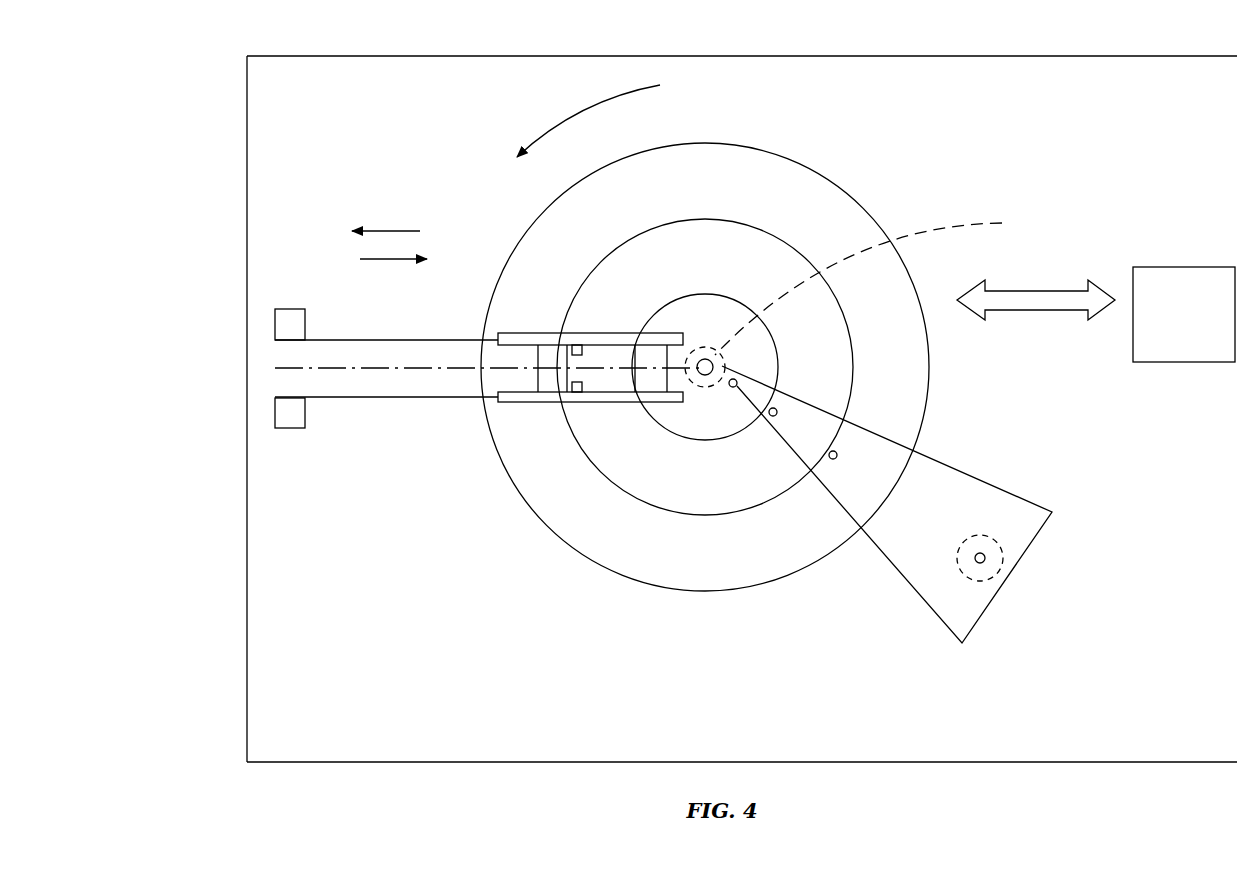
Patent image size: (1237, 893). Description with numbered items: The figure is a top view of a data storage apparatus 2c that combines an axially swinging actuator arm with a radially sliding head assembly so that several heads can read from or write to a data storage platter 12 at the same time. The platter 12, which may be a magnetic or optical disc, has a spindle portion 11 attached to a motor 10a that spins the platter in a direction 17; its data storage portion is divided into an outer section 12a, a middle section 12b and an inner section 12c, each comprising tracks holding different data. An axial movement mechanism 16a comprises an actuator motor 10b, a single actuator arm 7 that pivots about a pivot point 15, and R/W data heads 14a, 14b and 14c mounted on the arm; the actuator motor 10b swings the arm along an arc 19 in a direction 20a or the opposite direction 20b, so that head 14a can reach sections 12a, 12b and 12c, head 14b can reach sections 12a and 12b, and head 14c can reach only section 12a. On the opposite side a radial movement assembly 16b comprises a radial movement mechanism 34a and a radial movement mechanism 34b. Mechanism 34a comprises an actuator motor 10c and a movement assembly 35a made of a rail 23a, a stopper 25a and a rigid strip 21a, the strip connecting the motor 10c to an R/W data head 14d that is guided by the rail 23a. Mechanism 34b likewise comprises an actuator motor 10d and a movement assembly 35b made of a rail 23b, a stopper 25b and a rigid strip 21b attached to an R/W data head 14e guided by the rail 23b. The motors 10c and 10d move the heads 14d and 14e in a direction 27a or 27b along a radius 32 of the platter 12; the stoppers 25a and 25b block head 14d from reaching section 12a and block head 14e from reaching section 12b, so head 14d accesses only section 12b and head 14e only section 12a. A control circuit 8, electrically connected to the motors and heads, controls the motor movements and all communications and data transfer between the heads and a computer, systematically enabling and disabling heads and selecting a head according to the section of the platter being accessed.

The data storage apparatus 2c is at (222, 145).
The single actuator arm 7 is at (995, 488).
The control circuit 8 is at (1177, 352).
The motor 10a is at (716, 350).
The actuator motor 10b is at (1000, 545).
The actuator motor 10c is at (292, 309).
The actuator motor 10d is at (288, 430).
The spindle portion 11 is at (705, 377).
The data storage platter 12 is at (838, 185).
The section 12a is at (690, 196).
The section 12b is at (690, 266).
The section 12c is at (690, 329).
The R/W data head 14a is at (732, 388).
The R/W data head 14b is at (776, 416).
The R/W data head 14c is at (836, 459).
The R/W data head 14d is at (646, 378).
The R/W data head 14e is at (553, 386).
The pivot point 15 is at (985, 558).
The axial movement mechanism 16a is at (975, 425).
The radial movement assembly 16b is at (466, 238).
The direction 17 is at (558, 125).
The arc 19 is at (838, 262).
The direction 20a is at (1002, 222).
The direction 20b is at (722, 372).
The rigid strip 21a is at (338, 338).
The rigid strip 21b is at (337, 397).
The rail 23a is at (533, 337).
The rail 23b is at (527, 402).
The stopper 25a is at (578, 345).
The stopper 25b is at (578, 393).
The direction 27a is at (382, 228).
The direction 27b is at (405, 260).
The radius 32 is at (290, 372).
The radial movement mechanism 34a is at (287, 235).
The radial movement mechanism 34b is at (287, 518).
The movement assembly 35a is at (490, 330).
The movement assembly 35b is at (495, 407).